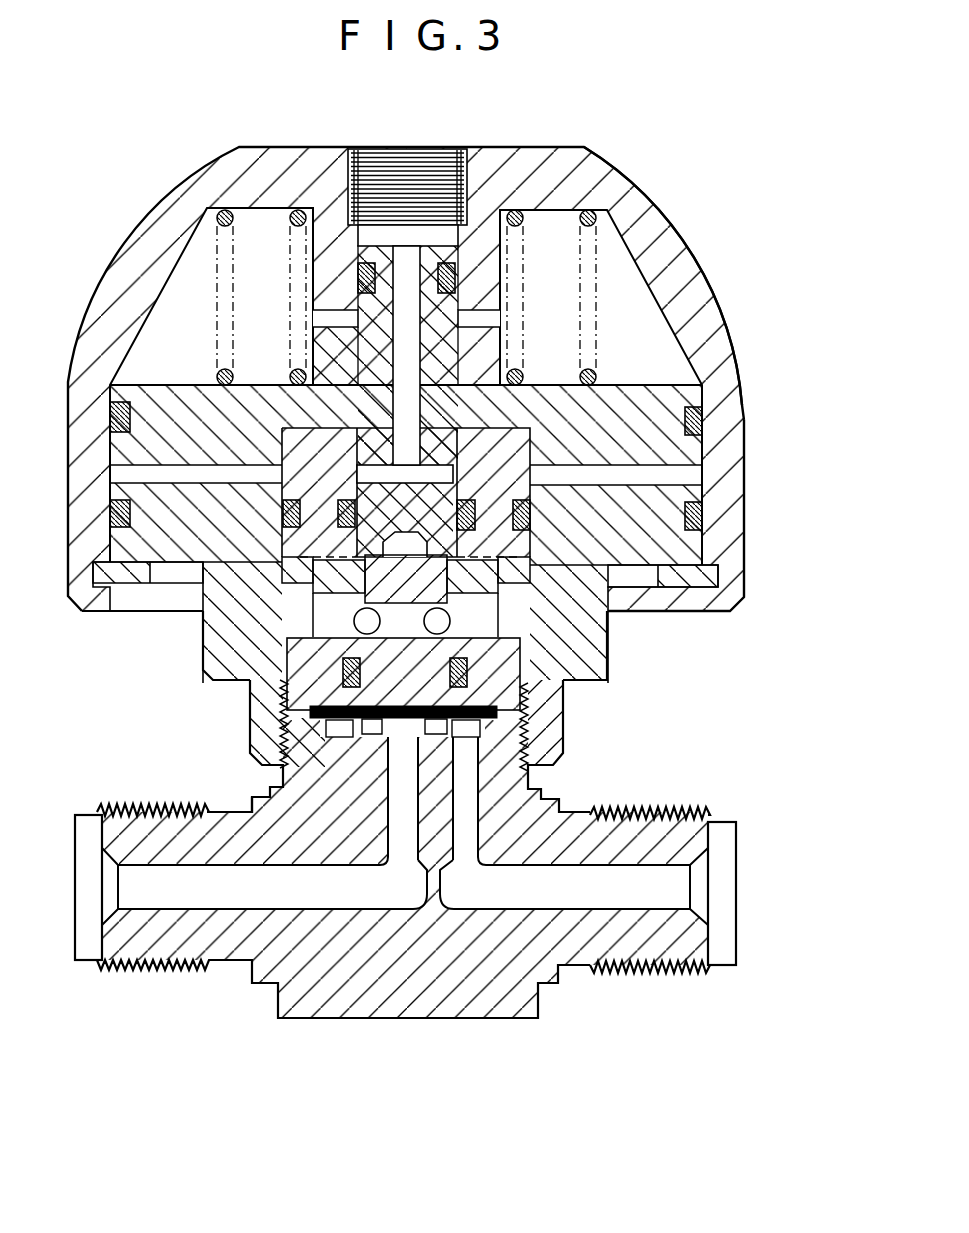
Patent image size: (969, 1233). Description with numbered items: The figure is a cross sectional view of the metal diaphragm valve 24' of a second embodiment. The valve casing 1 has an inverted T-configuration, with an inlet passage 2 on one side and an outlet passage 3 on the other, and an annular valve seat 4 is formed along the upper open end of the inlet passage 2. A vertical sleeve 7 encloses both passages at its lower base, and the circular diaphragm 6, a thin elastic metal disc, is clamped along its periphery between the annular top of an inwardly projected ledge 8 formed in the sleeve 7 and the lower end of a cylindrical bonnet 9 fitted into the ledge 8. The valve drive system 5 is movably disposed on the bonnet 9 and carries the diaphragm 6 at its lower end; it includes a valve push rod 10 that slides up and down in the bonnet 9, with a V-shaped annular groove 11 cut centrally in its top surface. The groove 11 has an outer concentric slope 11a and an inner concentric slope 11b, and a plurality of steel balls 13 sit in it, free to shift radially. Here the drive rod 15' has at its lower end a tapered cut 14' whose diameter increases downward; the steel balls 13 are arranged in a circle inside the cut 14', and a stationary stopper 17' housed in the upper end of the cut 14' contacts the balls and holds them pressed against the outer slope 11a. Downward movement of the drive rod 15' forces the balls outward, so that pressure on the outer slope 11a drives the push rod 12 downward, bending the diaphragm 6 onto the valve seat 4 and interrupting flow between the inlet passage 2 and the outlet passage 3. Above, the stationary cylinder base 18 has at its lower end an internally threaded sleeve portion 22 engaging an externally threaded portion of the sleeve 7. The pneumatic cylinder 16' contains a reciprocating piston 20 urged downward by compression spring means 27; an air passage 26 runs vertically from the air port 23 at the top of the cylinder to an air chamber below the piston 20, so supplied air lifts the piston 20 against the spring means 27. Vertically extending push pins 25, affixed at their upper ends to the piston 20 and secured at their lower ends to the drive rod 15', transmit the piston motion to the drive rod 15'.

The valve casing 1 is at (375, 1022).
The inlet passage 2 is at (330, 900).
The outlet passage 3 is at (503, 903).
The annular valve seat 4 is at (370, 736).
The valve drive system 5 is at (638, 177).
The circular diaphragm 6 is at (430, 734).
The vertical sleeve 7 is at (565, 700).
The inwardly projected ledge 8 is at (313, 697).
The cylindrical bonnet 9 is at (293, 648).
The valve push rod 10 is at (553, 743).
The annular groove 11 is at (318, 600).
The outer concentric slope 11a is at (345, 628).
The inner concentric slope 11b is at (446, 645).
The push rod 12 is at (590, 684).
The steel balls 13 is at (286, 556).
The tapered cut 14' is at (483, 567).
The drive rod 15' is at (458, 598).
The pneumatic cylinder 16' is at (710, 446).
The stationary stopper 17' is at (407, 511).
The stationary cylinder base 18 is at (703, 503).
The reciprocating piston 20 is at (697, 385).
The internally threaded sleeve portion 22 is at (563, 765).
The air port 23 is at (444, 160).
The metal diaphragm valve 24' is at (680, 265).
The push pins 25 is at (515, 532).
The air passage 26 is at (412, 400).
The compression spring means 27 is at (604, 378).